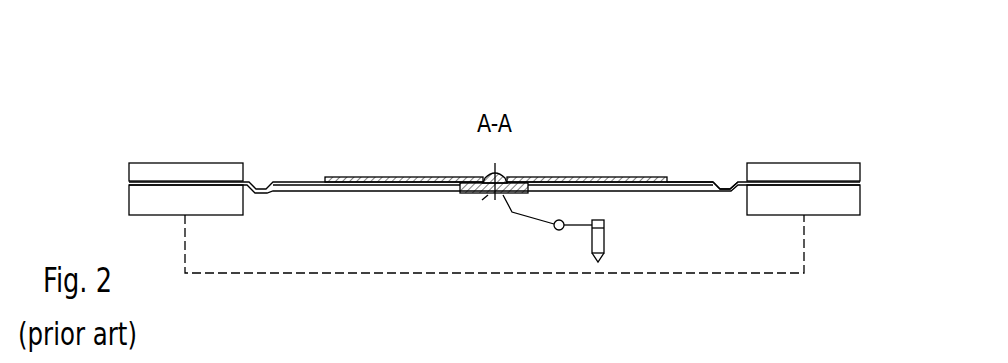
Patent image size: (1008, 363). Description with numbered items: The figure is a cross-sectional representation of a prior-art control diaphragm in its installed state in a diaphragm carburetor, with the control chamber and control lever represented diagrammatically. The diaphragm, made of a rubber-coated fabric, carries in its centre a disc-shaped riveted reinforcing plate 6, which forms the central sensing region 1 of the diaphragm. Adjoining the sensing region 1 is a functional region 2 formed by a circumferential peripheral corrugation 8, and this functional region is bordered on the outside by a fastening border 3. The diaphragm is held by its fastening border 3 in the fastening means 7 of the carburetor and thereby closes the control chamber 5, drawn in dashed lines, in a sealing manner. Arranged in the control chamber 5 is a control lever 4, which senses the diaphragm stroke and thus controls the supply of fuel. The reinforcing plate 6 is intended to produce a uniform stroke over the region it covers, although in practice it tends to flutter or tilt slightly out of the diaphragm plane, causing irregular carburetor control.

The sensing region 1 is at (446, 153).
The functional region 2 is at (735, 152).
The fastening border 3 is at (198, 182).
The control lever 4 is at (496, 197).
The control chamber 5 is at (340, 232).
The reinforcing plate 6 is at (543, 180).
The fastening means 7 is at (836, 176).
The peripheral corrugation 8 is at (728, 182).